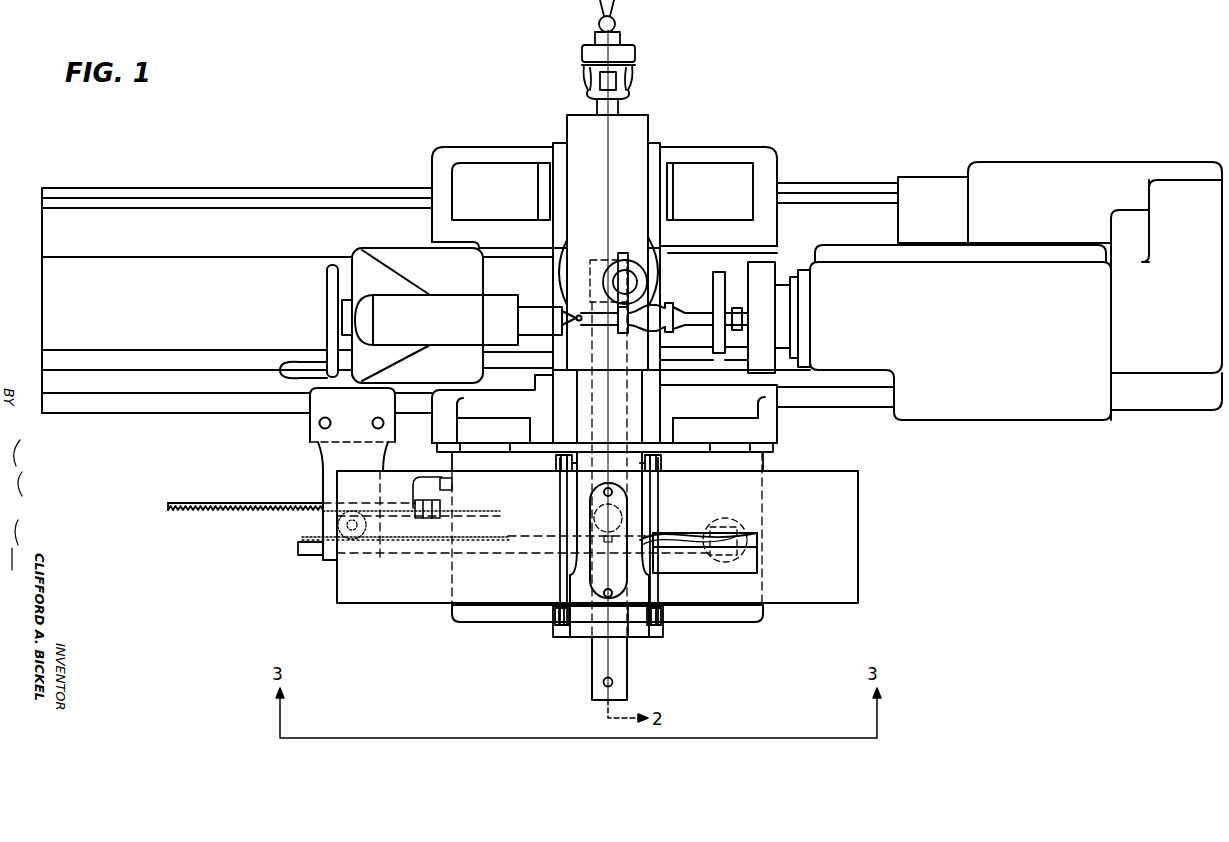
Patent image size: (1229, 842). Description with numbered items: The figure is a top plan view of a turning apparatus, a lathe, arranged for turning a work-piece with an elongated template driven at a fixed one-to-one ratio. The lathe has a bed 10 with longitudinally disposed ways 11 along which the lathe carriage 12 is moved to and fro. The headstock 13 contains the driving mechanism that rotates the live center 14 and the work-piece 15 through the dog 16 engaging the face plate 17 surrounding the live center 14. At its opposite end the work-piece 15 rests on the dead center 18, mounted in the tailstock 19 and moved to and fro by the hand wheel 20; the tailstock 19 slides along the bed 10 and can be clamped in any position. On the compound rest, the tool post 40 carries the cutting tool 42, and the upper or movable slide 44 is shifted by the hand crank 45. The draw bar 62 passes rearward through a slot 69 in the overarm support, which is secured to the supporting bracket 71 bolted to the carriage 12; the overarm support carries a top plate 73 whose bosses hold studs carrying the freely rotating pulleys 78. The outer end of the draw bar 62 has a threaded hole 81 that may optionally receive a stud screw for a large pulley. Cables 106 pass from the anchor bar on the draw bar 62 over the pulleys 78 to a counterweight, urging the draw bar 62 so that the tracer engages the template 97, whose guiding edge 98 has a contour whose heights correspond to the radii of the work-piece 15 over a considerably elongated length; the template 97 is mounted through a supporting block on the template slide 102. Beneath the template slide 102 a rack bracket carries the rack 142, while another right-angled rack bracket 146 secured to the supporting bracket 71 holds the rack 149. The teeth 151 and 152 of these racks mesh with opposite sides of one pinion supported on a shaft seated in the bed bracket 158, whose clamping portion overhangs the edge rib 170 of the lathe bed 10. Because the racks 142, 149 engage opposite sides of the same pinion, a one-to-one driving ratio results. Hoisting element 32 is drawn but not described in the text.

The bed 10 is at (42, 230).
The ways 11 is at (182, 198).
The lathe carriage 12 is at (460, 153).
The headstock 13 is at (916, 295).
The live center 14 is at (740, 318).
The work-piece 15 is at (679, 309).
The dog 16 is at (731, 272).
The face plate 17 is at (767, 333).
The dead center 18 is at (562, 318).
The tailstock 19 is at (430, 315).
The hand wheel 20 is at (330, 309).
The hoisting eye 32 is at (616, 25).
The tool post 40 is at (640, 256).
The cutting tool 42 is at (606, 248).
The upper or movable slide 44 is at (637, 128).
The hand crank 45 is at (632, 93).
The draw bar 62 is at (598, 652).
The slot 69 is at (633, 634).
The supporting bracket 71 is at (471, 622).
The top plate 73 is at (580, 507).
The pulleys 78 is at (555, 463).
The threaded hole 81 is at (604, 684).
The template 97 is at (757, 555).
The guiding edge 98 is at (668, 536).
The template slide 102 is at (850, 495).
The cables 106 is at (559, 585).
The rack 142 is at (313, 556).
The rack bracket 146 is at (384, 472).
The rack 149 is at (228, 502).
The teeth 151 is at (305, 537).
The teeth 152 is at (208, 514).
The bed bracket 158 is at (323, 460).
The edge rib 170 is at (150, 404).